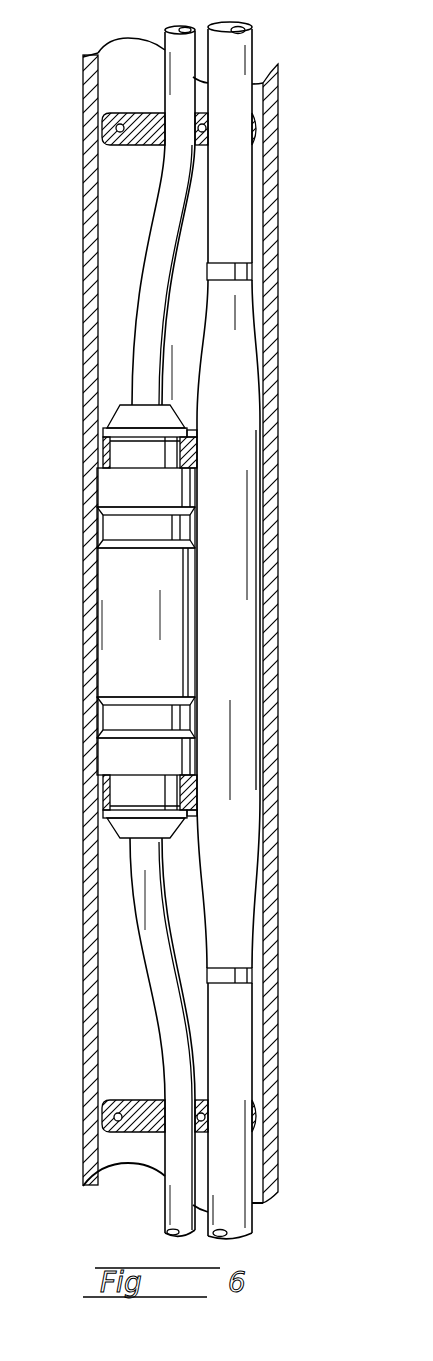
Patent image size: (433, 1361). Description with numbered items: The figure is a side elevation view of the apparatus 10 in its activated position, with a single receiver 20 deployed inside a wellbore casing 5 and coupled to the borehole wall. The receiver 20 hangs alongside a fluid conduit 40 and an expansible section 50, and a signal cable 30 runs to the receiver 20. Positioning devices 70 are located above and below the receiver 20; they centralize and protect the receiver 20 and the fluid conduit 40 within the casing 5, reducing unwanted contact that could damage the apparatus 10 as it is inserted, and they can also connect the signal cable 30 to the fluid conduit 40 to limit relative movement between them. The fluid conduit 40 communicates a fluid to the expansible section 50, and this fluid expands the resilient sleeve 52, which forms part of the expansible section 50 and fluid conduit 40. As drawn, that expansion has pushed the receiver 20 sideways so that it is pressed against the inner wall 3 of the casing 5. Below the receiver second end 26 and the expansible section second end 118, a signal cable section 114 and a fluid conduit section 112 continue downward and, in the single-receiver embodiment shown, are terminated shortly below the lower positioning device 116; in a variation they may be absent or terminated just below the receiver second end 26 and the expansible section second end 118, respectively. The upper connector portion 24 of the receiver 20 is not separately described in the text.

The inner wall 3 is at (97, 243).
The casing 5 is at (278, 338).
The apparatus 10 is at (168, 629).
The receiver 20 is at (115, 624).
The upper packer connector 24 is at (120, 417).
The receiver second end 26 is at (125, 825).
The signal cable 30 is at (165, 232).
The fluid conduit 40 is at (190, 615).
The expansible section 50 is at (264, 630).
The resilient sleeve 52 is at (228, 612).
The positioning device 70 is at (140, 116).
The fluid conduit section 112 is at (250, 1040).
The signal cable section 114 is at (148, 938).
The positioning device 116 is at (130, 1133).
The expansible section second end 118 is at (252, 975).